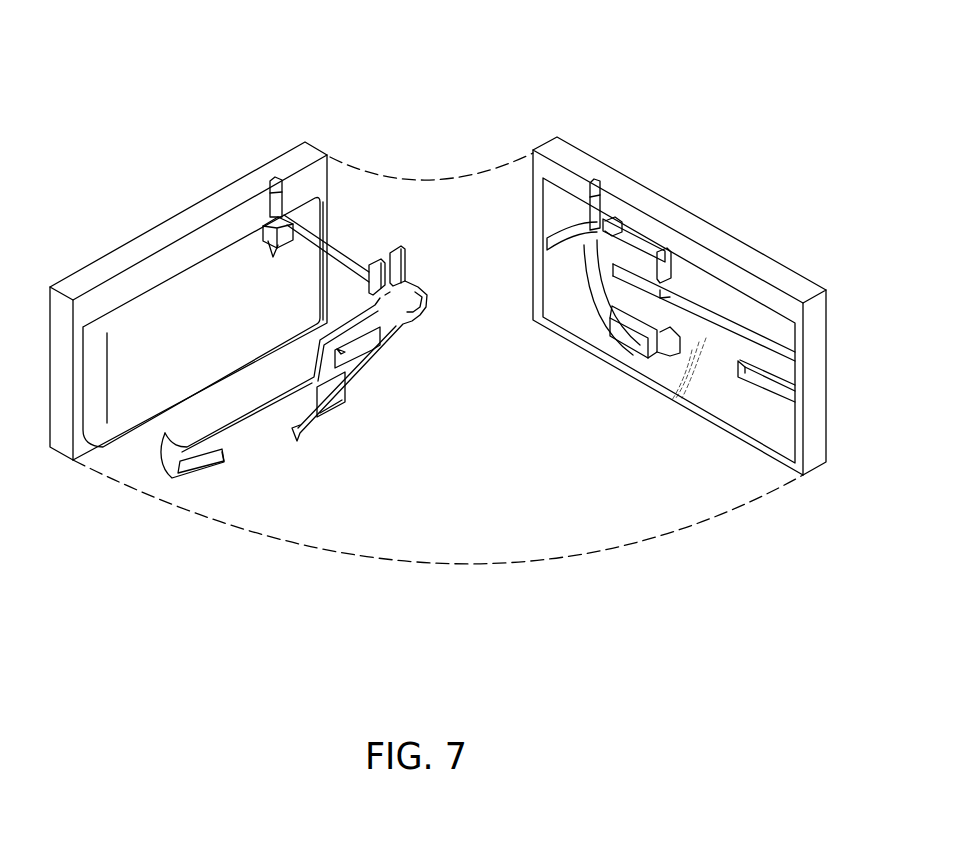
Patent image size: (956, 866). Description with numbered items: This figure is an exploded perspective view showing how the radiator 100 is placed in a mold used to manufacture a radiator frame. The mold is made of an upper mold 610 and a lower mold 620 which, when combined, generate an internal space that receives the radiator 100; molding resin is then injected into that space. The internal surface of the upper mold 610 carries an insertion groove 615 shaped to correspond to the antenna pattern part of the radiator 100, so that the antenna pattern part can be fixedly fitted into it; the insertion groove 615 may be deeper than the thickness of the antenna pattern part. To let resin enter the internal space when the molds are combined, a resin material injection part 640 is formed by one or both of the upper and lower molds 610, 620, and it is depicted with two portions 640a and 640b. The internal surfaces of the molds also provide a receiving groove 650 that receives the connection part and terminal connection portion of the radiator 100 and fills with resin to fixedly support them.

The radiator 100 is at (283, 447).
The upper mold 610 is at (660, 207).
The insertion groove 615 is at (633, 352).
The lower mold 620 is at (167, 228).
The resin material injection part 640 is at (447, 53).
The first connector terminal 640a is at (593, 183).
The second connector terminal 640b is at (277, 180).
The receiving groove 650 is at (270, 222).